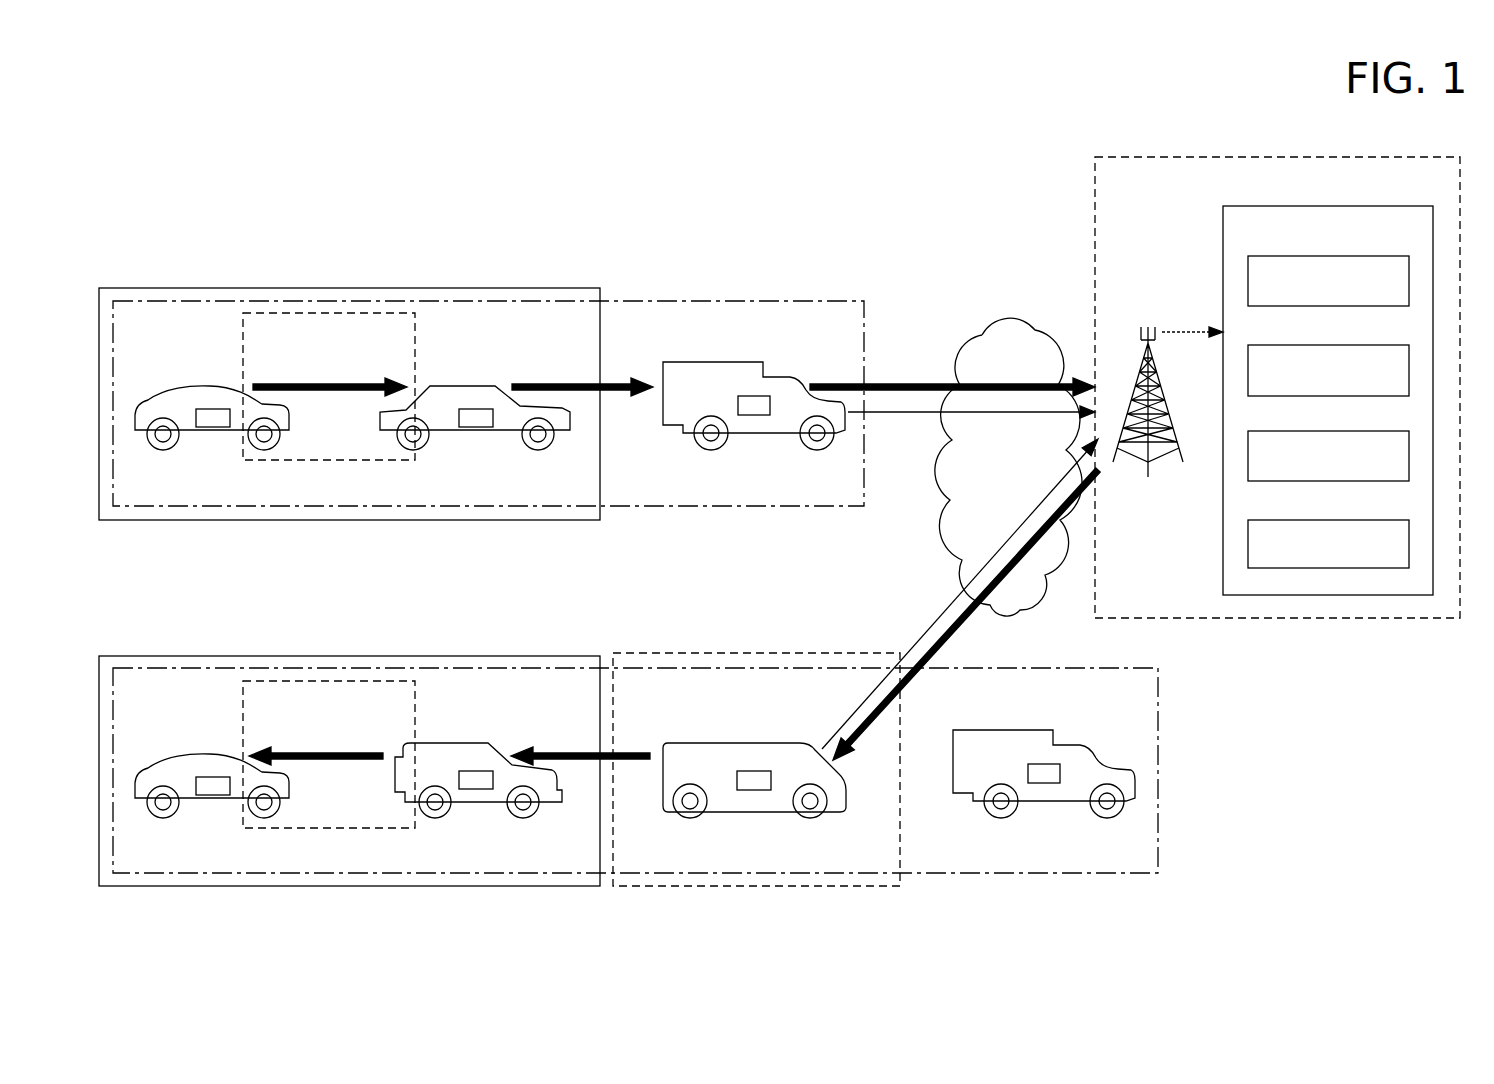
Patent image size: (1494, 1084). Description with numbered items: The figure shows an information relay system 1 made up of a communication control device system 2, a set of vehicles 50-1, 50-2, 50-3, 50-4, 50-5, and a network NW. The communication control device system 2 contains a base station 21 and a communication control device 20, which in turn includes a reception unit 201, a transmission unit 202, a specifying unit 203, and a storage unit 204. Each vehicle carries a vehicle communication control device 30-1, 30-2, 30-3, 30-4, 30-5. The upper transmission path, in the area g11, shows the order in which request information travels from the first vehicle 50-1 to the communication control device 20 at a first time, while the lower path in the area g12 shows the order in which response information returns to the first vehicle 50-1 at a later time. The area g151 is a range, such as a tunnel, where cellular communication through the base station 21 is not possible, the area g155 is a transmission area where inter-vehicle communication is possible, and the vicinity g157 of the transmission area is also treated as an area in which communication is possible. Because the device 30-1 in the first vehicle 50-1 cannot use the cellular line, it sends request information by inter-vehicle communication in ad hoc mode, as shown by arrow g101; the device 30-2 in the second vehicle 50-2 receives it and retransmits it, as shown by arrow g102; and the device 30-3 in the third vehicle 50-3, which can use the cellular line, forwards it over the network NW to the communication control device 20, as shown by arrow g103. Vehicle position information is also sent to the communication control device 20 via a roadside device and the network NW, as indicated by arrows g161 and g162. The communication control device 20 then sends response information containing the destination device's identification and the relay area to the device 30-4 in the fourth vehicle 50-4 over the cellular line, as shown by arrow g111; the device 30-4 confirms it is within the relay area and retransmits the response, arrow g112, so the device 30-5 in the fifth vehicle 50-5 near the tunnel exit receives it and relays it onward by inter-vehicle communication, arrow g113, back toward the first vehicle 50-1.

The information relay system 1 is at (178, 157).
The communication control device system 2 is at (1426, 157).
The communication control device 20 is at (1394, 206).
The reception unit 201 is at (1347, 256).
The transmission unit 202 is at (1347, 345).
The specifying unit 203 is at (1347, 431).
The storage unit 204 is at (1347, 520).
The base station 21 is at (1165, 462).
The network NW is at (1006, 305).
The first vehicle 50-1 is at (195, 386).
The second vehicle 50-2 is at (461, 386).
The third vehicle 50-3 is at (718, 362).
The fourth vehicle 50-4 is at (733, 743).
The fifth vehicle 50-5 is at (450, 743).
The vehicle communication control device 30-1 is at (212, 427).
The vehicle communication control device 30-2 is at (475, 427).
The vehicle communication control device 30-3 is at (753, 415).
The vehicle communication control device 30-4 is at (753, 790).
The vehicle communication control device 30-5 is at (475, 789).
The transmission path area g11 is at (710, 301).
The transmission path area g12 is at (994, 873).
The range in which cellular communication is not possible g151 is at (364, 288).
The transmission area g155 is at (274, 313).
The vicinity of transmission area g157 is at (757, 653).
The request information transmission g101 is at (316, 384).
The request information transmission g102 is at (564, 384).
The request information transmission g103 is at (914, 384).
The position information transmission g161 is at (914, 414).
The position information transmission g162 is at (926, 628).
The response information transmission g111 is at (990, 612).
The response information transmission g112 is at (564, 753).
The response information transmission g113 is at (316, 753).